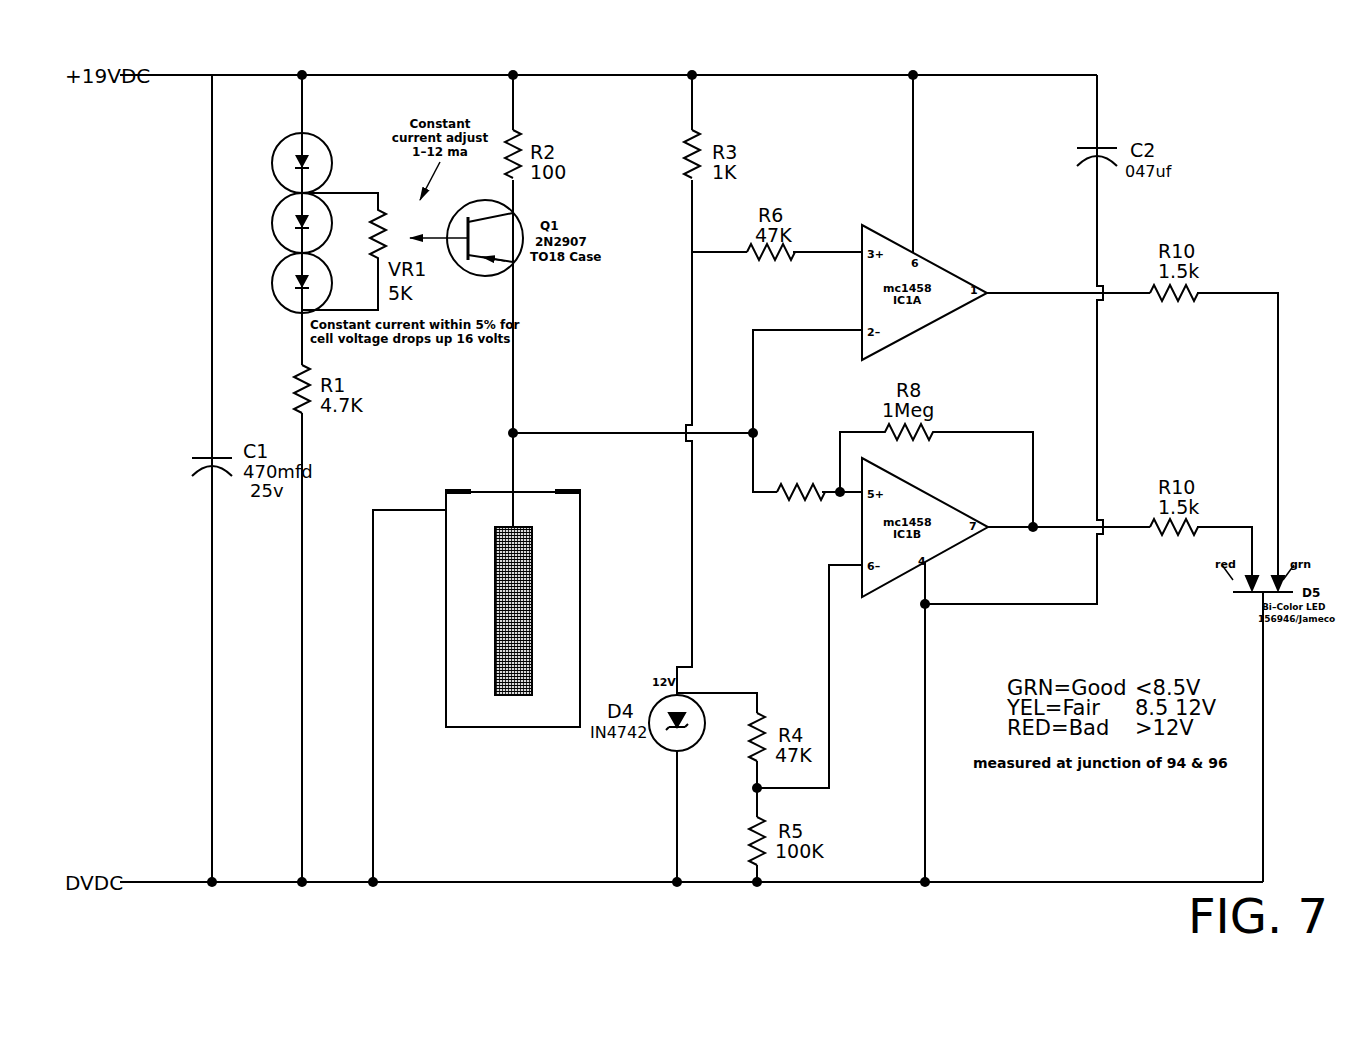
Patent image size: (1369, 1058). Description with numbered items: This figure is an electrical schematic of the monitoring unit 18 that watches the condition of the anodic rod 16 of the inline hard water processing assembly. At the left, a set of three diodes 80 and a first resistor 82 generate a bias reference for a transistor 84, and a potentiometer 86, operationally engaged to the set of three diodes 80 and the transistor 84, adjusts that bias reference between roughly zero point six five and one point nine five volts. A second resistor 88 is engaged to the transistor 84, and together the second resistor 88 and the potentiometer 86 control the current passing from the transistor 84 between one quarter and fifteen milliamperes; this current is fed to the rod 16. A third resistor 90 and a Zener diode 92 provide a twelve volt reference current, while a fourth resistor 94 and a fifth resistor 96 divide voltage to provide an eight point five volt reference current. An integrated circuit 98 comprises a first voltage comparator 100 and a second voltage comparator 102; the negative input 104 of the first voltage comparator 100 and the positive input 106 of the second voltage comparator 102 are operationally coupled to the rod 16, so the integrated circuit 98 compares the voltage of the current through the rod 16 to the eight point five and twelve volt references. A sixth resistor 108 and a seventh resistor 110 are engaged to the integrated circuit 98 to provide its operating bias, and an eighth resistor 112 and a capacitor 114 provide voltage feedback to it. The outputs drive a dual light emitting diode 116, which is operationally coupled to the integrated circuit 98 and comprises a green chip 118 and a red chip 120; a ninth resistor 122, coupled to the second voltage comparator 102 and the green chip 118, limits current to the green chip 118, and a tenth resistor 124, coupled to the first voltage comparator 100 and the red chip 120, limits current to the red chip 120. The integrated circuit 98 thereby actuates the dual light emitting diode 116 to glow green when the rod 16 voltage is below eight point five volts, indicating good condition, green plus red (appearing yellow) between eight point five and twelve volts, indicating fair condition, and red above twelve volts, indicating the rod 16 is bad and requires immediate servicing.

The rod 16 is at (490, 672).
The monitoring unit 18 is at (1226, 165).
The set of three diodes 80 is at (268, 283).
The first resistor 82 is at (292, 383).
The transistor 84 is at (532, 214).
The potentiometer 86 is at (392, 205).
The second resistor 88 is at (525, 136).
The third resistor 90 is at (683, 150).
The Zener diode 92 is at (660, 750).
The fourth resistor 94 is at (746, 735).
The fifth resistor 96 is at (745, 832).
The integrated circuit 98 is at (930, 492).
The first voltage comparator 100 is at (950, 262).
The second voltage comparator 102 is at (900, 572).
The negative input 104 is at (858, 322).
The positive input 106 is at (857, 500).
The sixth resistor 108 is at (772, 200).
The seventh resistor 110 is at (796, 507).
The eighth resistor 112 is at (440, 608).
The capacitor 114 is at (1168, 150).
The dual light emitting diode 116 is at (1262, 607).
The green chip 118 is at (1300, 576).
The red chip 120 is at (1258, 584).
The ninth resistor 122 is at (1226, 452).
The tenth resistor 124 is at (1210, 262).